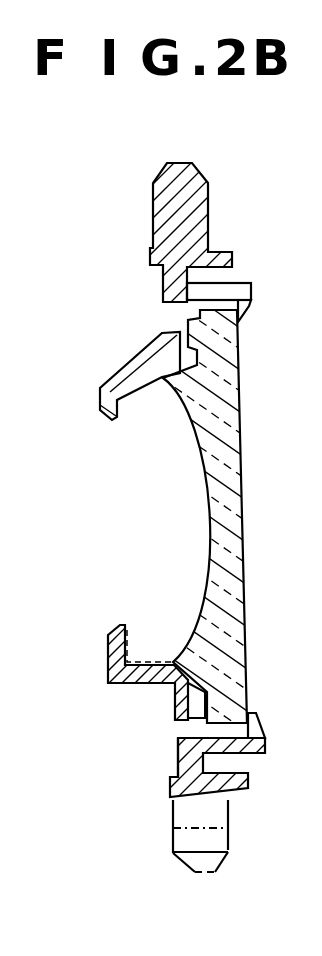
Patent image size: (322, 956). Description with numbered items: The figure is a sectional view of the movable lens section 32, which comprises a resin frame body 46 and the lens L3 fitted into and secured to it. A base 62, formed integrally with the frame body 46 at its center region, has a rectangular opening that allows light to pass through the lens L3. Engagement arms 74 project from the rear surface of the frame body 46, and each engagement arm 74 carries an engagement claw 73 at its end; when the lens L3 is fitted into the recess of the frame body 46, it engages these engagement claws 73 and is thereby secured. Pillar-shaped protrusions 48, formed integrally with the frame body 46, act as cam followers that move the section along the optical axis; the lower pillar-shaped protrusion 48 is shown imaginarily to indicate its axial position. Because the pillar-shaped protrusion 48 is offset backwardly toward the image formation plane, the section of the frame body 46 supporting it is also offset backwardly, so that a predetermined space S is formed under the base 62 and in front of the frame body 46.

The movable lens section 32 is at (250, 177).
The pillar-shaped protrusion 48 is at (208, 214).
The engagement arm 74 is at (256, 290).
The engagement claw 73 is at (245, 312).
The lens L3 is at (240, 448).
The base 62 is at (152, 362).
The predetermined space S is at (103, 718).
The frame body 46 is at (170, 755).